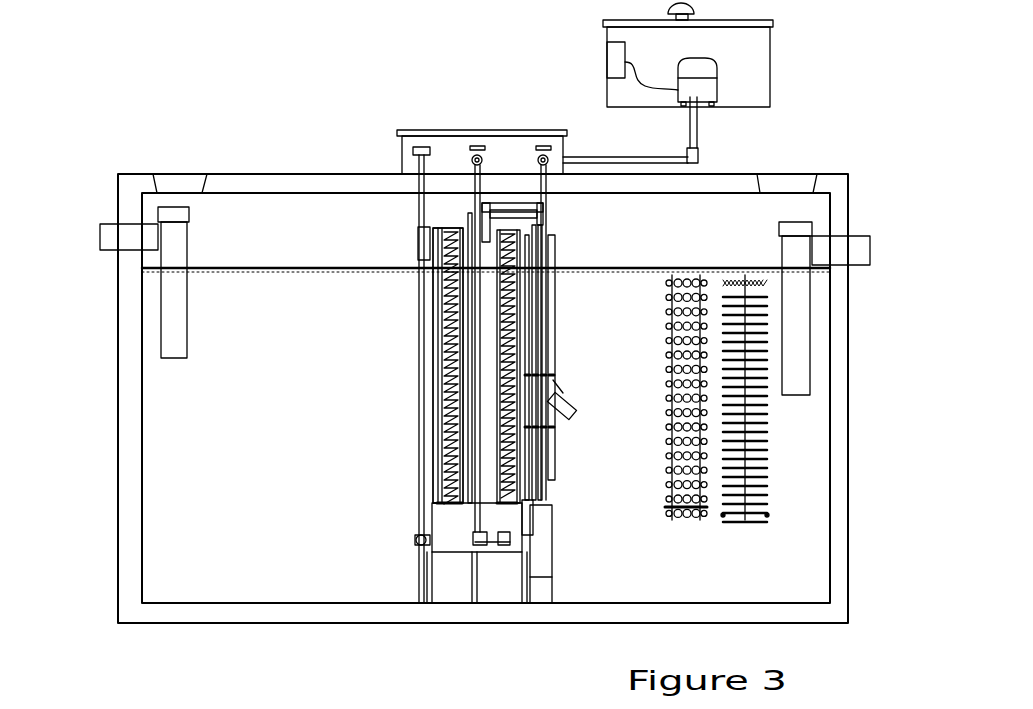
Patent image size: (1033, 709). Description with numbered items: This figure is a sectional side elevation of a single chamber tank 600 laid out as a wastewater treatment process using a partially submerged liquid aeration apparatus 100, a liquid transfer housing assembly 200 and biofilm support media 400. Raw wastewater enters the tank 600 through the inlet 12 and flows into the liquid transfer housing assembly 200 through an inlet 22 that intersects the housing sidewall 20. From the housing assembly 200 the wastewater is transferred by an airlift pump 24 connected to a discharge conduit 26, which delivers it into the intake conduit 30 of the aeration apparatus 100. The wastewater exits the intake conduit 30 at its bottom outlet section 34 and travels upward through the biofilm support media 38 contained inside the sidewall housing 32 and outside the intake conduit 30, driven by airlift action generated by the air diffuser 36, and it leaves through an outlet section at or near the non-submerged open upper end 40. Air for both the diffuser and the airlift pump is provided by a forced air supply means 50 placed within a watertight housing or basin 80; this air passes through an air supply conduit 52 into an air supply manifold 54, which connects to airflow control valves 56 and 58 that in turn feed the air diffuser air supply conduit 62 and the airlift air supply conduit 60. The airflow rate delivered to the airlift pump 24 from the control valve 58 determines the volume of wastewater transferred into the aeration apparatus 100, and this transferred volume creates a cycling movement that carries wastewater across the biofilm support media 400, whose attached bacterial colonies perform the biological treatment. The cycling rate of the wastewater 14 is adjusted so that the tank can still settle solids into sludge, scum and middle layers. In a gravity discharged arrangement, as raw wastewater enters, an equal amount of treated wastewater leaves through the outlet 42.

The inlet 12 is at (100, 238).
The wastewater 14 is at (265, 268).
The housing sidewall 20 is at (554, 478).
The inlet 22 is at (571, 415).
The airlift pump 24 is at (546, 552).
The discharge conduit 26 is at (545, 226).
The intake conduit 30 is at (468, 366).
The sidewall housing 32 is at (432, 462).
The bottom outlet section 34 is at (416, 541).
The air diffuser 36 is at (435, 507).
The biofilm support media 38 is at (440, 312).
The non-submerged open upper end 40 is at (440, 224).
The outlet 42 is at (870, 254).
The forced air supply means 50 is at (718, 96).
The air supply conduit 52 is at (698, 128).
The air supply manifold 54 is at (602, 158).
The airflow control valve 56 is at (477, 150).
The airflow control valve 58 is at (543, 150).
The airlift air supply conduit 60 is at (556, 262).
The air diffuser air supply conduit 62 is at (472, 173).
The watertight housing or basin 80 is at (774, 50).
The partially submerged liquid aeration apparatus 100 is at (394, 441).
The liquid transfer housing assembly 200 is at (558, 347).
The biofilm support media 400 is at (648, 411).
The tank 600 is at (94, 394).